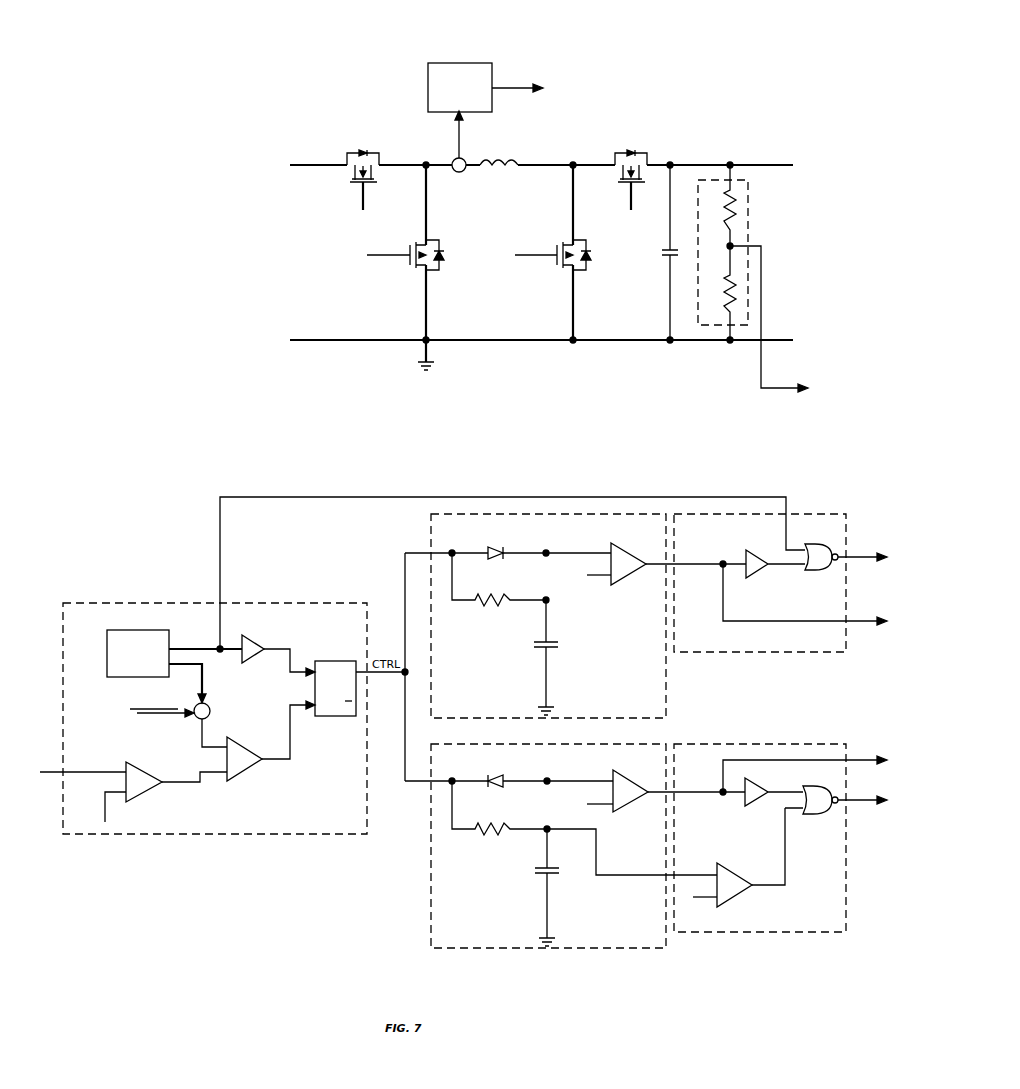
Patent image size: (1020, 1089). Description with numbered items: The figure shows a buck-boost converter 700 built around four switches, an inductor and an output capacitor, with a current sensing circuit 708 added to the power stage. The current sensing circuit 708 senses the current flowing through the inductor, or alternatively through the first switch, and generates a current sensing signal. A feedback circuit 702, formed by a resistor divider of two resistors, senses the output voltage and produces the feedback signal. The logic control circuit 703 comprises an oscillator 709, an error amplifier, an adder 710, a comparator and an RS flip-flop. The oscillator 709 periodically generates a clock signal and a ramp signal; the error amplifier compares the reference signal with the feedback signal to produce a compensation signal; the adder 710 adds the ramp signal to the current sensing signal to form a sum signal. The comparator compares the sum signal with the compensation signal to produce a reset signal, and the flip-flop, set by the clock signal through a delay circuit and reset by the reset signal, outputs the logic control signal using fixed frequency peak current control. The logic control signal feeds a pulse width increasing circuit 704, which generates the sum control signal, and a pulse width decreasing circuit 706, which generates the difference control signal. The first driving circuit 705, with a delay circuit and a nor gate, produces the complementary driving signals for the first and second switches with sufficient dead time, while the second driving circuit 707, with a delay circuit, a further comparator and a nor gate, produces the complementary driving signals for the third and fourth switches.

The buck-boost converter 700 is at (790, 70).
The feedback circuit 702 is at (696, 310).
The logic control circuit 703 is at (76, 836).
The pulse width increasing circuit 704 is at (447, 718).
The first driving circuit 705 is at (710, 652).
The pulse width decreasing circuit 706 is at (440, 948).
The second driving circuit 707 is at (707, 932).
The current sensing circuit 708 is at (437, 112).
The oscillator 709 is at (118, 677).
The adder 710 is at (210, 712).